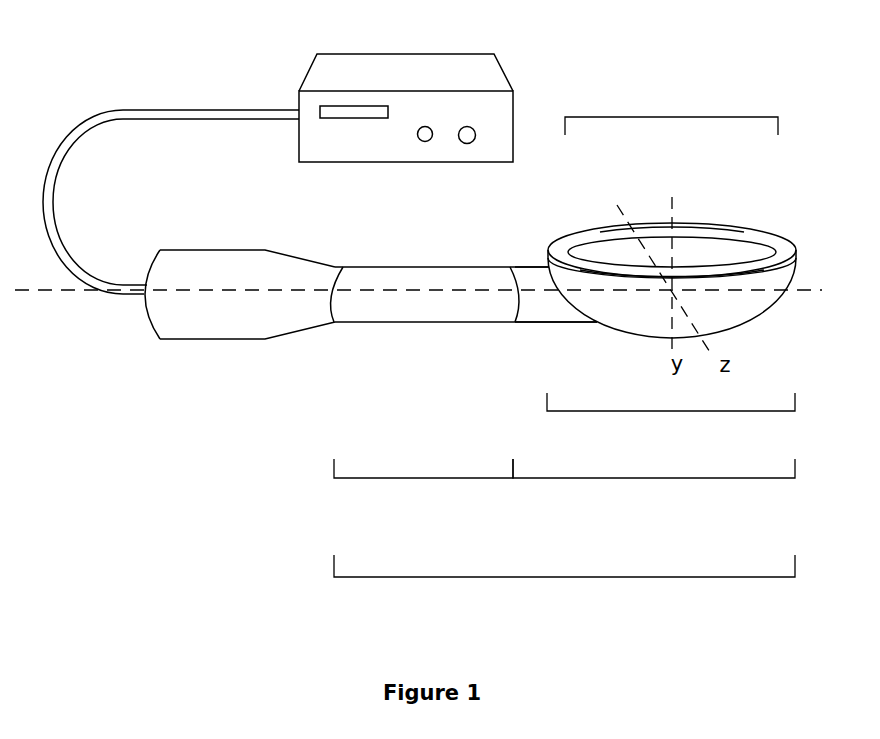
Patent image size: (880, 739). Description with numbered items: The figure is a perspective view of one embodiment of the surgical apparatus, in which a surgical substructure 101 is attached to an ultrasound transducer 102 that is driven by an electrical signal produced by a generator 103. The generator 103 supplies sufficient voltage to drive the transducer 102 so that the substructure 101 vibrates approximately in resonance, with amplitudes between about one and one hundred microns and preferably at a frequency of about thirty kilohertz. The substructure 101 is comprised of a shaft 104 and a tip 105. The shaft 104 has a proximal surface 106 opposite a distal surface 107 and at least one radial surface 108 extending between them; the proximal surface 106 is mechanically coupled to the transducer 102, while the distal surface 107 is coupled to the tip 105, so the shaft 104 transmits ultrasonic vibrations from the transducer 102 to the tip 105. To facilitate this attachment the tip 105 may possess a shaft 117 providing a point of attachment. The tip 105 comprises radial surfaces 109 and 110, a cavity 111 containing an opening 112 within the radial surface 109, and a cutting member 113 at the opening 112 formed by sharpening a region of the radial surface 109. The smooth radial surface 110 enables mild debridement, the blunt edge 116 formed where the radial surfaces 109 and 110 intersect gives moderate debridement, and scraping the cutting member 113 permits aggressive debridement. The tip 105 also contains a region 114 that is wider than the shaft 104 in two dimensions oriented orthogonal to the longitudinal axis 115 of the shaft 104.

The surgical substructure 101 is at (547, 577).
The ultrasound transducer 102 is at (228, 287).
The generator 103 is at (458, 74).
The shaft 104 is at (424, 478).
The tip 105 is at (673, 478).
The proximal surface 106 is at (339, 277).
The distal surface 107 is at (510, 273).
The radial surface 108 is at (407, 267).
The radial surface 109 is at (788, 250).
The radial surface 110 is at (680, 322).
The cavity 111 is at (687, 250).
The opening 112 is at (672, 117).
The cutting member 113 is at (643, 225).
The region 114 is at (653, 411).
The longitudinal axis 115 is at (52, 290).
The blunt edge 116 is at (617, 275).
The shaft 117 is at (548, 304).